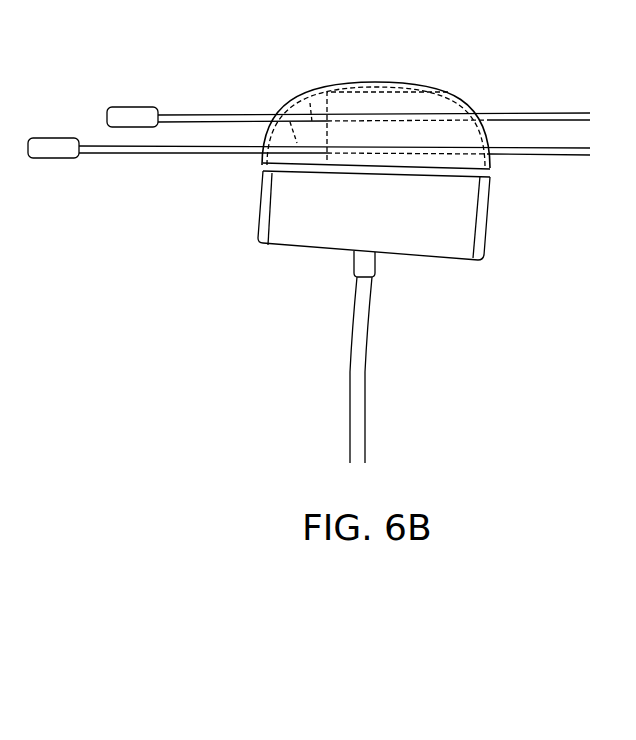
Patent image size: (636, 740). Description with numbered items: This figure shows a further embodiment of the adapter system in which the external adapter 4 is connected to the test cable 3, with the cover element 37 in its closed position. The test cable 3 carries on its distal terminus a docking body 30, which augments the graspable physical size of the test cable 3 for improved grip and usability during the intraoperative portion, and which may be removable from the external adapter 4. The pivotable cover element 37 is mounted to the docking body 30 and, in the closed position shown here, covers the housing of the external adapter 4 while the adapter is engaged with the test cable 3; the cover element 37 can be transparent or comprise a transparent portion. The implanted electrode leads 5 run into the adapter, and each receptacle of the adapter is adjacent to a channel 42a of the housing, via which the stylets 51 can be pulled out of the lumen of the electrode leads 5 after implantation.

The test cable 3 is at (378, 372).
The external adapter 4 is at (465, 103).
The electrode leads 5 is at (572, 113).
The docking body 30 is at (290, 240).
The cover element 37 is at (375, 100).
The channel 42a is at (312, 93).
The stylets 51 is at (208, 115).